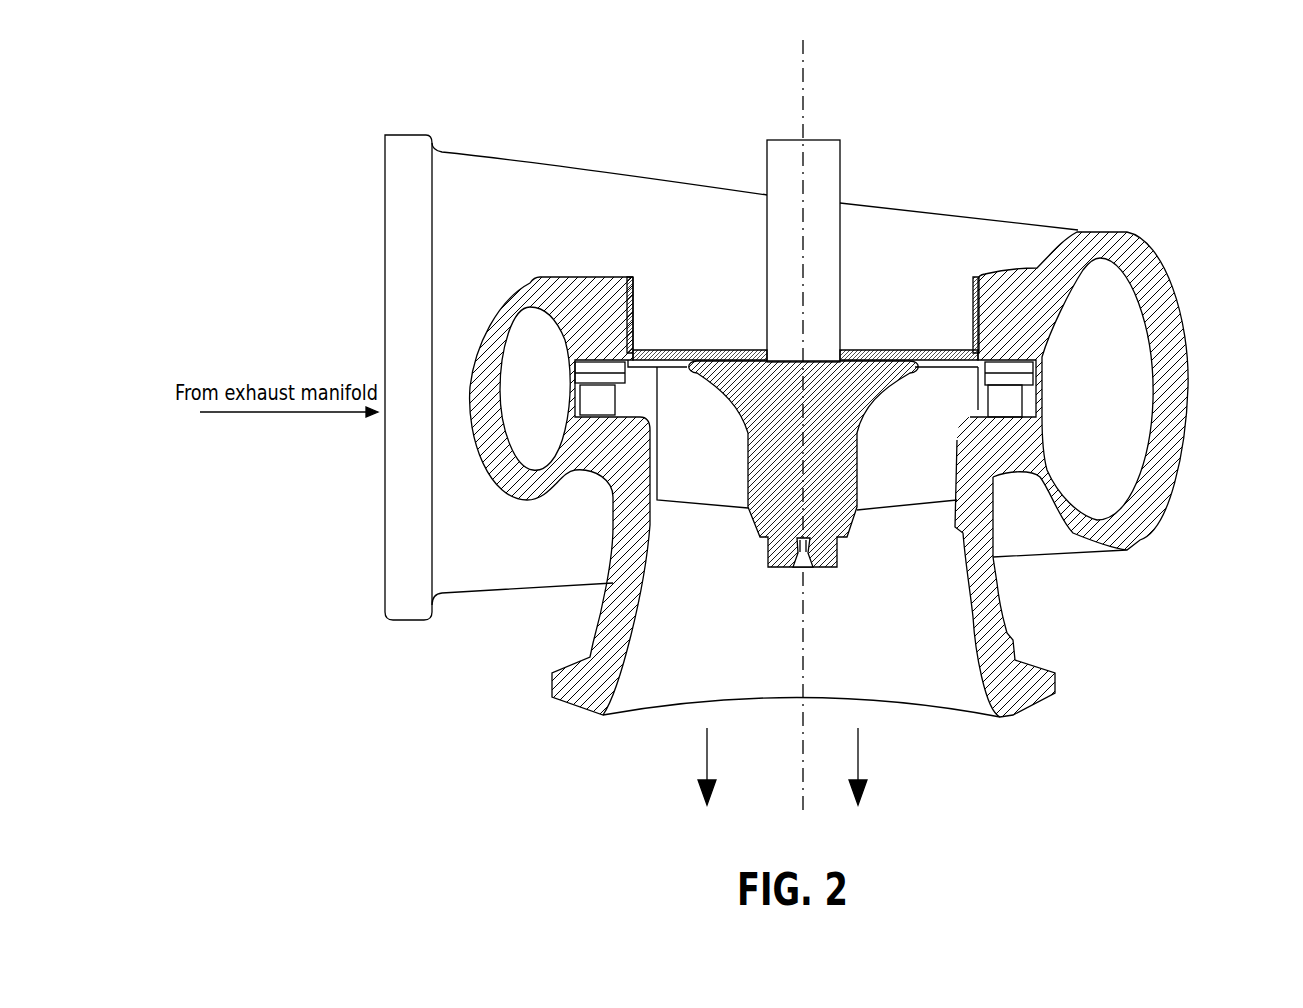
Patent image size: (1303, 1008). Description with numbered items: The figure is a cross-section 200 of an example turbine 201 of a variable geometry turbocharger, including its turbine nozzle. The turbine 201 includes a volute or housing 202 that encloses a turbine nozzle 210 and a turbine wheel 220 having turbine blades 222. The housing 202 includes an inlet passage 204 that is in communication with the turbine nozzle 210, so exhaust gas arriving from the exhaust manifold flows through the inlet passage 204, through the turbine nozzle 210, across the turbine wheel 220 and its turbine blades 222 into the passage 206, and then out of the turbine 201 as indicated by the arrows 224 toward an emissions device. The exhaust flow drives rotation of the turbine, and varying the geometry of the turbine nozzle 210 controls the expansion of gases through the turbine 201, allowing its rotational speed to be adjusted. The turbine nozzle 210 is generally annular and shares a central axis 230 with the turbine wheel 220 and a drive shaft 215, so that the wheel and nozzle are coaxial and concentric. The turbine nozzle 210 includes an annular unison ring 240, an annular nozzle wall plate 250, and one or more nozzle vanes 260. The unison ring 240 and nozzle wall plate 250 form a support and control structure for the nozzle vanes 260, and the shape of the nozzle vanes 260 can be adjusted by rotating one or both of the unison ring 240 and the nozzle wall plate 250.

The cross-section 200 is at (613, 318).
The turbine 201 is at (1226, 270).
The housing 202 is at (940, 212).
The inlet passage 204 is at (555, 434).
The passage 206 is at (723, 601).
The turbine nozzle 210 is at (560, 397).
The drive shaft 215 is at (840, 167).
The turbine wheel 220 is at (827, 567).
The turbine blades 222 is at (723, 455).
The arrows 224 is at (860, 748).
The central axis 230 is at (800, 797).
The unison ring 240 is at (1030, 364).
The nozzle wall plate 250 is at (1033, 374).
The nozzle vanes 260 is at (615, 398).